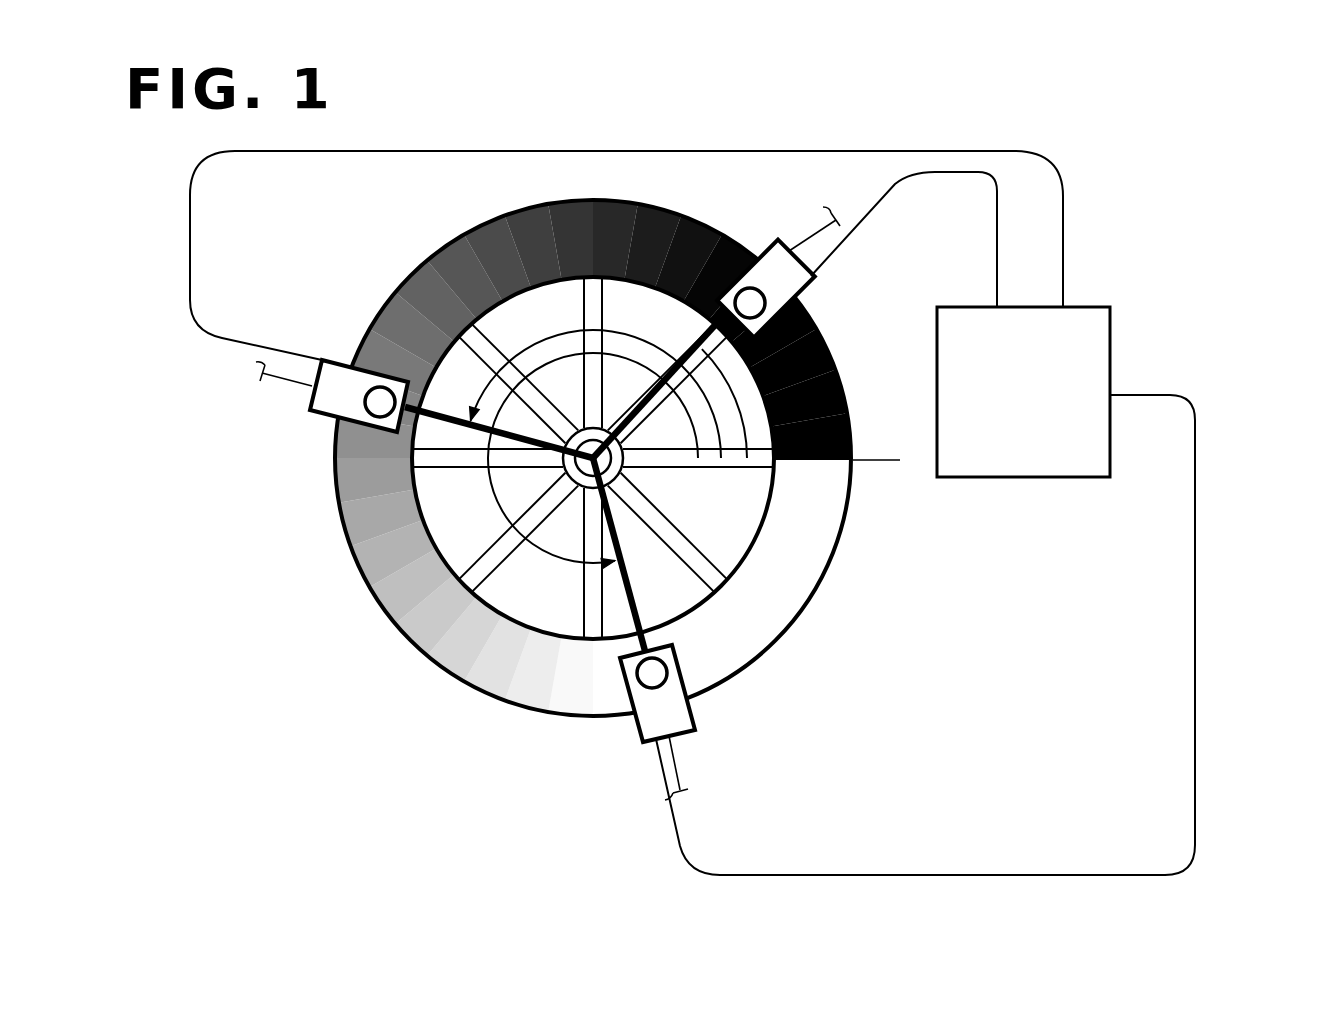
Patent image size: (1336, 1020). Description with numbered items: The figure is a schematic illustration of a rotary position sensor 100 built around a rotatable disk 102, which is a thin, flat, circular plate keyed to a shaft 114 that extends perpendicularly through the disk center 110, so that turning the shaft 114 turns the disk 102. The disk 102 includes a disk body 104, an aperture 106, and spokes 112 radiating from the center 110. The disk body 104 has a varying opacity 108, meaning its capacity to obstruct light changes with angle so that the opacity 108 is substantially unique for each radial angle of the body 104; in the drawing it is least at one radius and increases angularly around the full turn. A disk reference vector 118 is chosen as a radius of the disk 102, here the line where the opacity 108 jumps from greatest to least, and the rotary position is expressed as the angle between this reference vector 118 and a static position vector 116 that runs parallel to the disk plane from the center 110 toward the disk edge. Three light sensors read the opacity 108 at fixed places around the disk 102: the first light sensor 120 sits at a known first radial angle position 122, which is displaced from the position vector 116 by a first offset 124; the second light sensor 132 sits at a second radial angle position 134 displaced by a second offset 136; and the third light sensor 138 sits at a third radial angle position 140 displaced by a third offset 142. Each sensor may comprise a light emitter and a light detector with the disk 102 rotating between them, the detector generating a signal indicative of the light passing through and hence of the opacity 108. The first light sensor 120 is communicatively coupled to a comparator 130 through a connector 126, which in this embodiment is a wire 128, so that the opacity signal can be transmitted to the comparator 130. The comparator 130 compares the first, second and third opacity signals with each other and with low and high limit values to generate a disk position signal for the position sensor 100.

The rotary position sensor 100 is at (1017, 116).
The rotatable disk 102 is at (710, 208).
The disk body 104 is at (463, 279).
The aperture 106 is at (541, 606).
The opacity 108 is at (385, 352).
The disk center 110 is at (593, 455).
The spokes 112 is at (705, 550).
The shaft 114 is at (593, 455).
The position vector 116 is at (900, 460).
The disk reference vector 118 is at (818, 462).
The first light sensor 120 is at (792, 250).
The first radial angle position 122 is at (837, 226).
The first offset 124 is at (745, 408).
The connector 126 is at (697, 150).
The wire 128 is at (770, 128).
The comparator 130 is at (1050, 478).
The second light sensor 132 is at (312, 413).
The second radial angle position 134 is at (262, 375).
The second offset 136 is at (507, 362).
The third light sensor 138 is at (695, 715).
The third radial angle position 140 is at (685, 772).
The third offset 142 is at (490, 500).